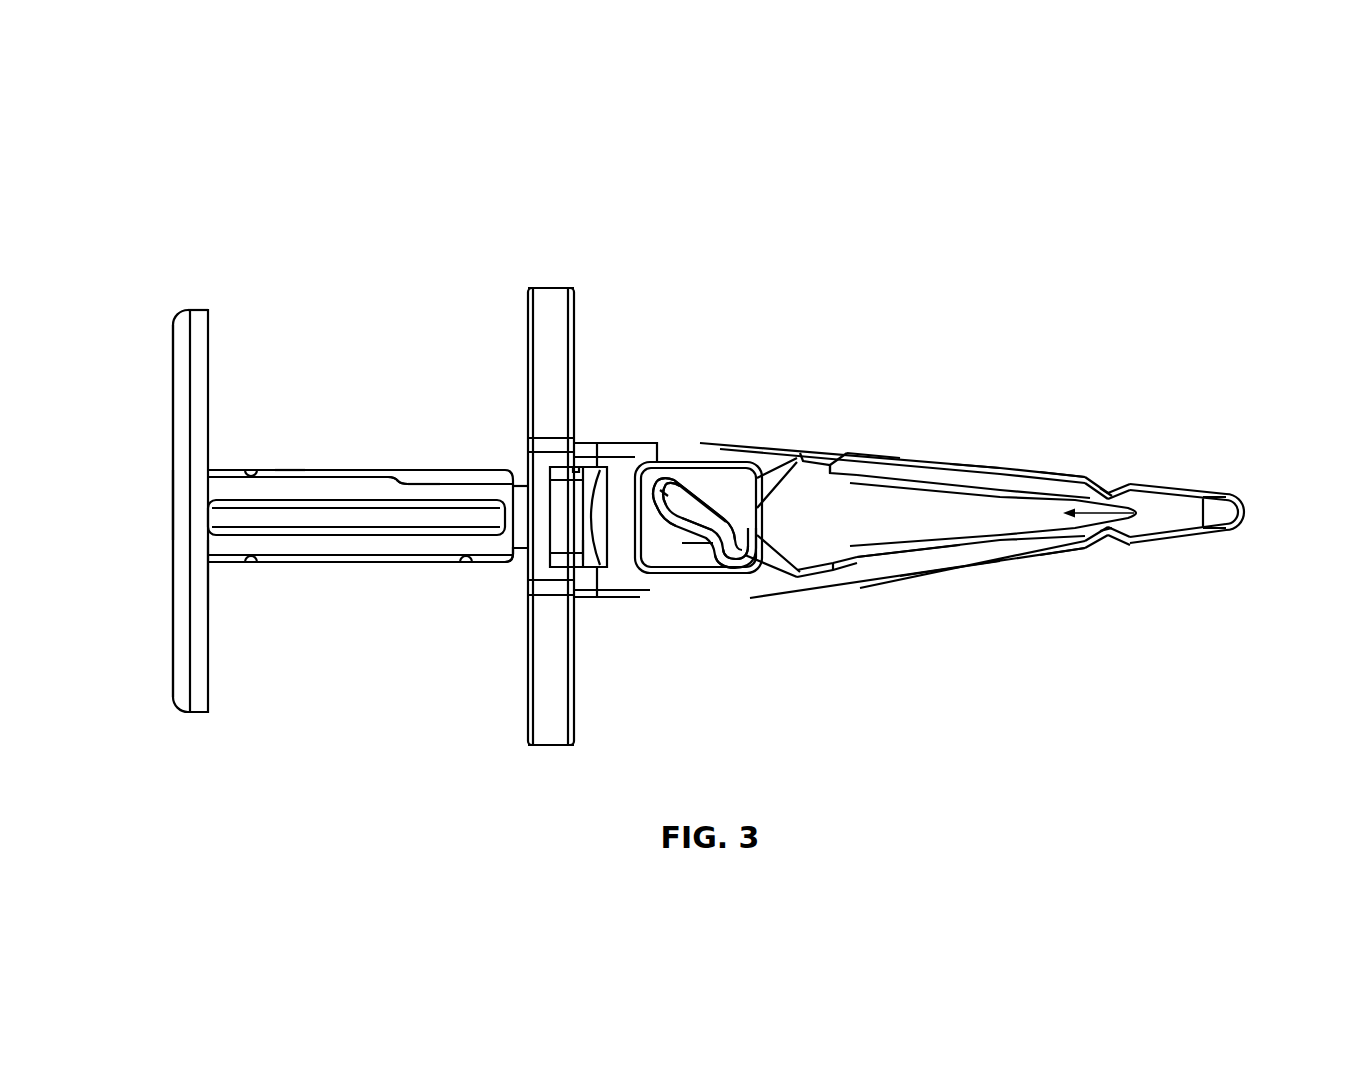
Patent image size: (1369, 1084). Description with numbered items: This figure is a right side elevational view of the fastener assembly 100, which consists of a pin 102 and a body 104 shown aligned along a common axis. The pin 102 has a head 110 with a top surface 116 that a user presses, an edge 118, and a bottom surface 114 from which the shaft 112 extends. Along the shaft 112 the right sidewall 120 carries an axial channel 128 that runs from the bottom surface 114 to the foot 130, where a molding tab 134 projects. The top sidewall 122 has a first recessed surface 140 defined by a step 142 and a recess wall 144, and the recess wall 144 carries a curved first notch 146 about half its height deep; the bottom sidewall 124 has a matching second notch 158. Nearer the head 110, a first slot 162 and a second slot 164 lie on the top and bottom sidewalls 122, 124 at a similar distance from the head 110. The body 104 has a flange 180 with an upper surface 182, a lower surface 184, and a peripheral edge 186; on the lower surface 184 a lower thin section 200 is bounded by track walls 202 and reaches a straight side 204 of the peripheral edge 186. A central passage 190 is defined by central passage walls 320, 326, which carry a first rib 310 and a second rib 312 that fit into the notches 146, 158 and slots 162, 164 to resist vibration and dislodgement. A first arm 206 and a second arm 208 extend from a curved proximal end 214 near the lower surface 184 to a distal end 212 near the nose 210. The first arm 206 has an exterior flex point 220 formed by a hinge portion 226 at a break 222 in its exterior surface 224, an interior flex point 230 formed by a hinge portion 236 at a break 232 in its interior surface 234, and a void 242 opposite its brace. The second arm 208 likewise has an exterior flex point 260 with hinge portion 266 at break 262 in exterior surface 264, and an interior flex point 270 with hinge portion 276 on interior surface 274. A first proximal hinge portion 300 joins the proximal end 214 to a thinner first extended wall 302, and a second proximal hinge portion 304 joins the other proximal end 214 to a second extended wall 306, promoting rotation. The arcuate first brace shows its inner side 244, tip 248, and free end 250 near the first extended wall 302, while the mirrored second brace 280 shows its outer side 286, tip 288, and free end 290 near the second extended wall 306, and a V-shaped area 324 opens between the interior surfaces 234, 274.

The fastener assembly 100 is at (165, 185).
The pin 102 is at (175, 612).
The body 104 is at (1250, 518).
The head 110 is at (180, 560).
The shaft 112 is at (290, 565).
The bottom surface 114 is at (205, 316).
The top surface 116 is at (180, 497).
The edge 118 is at (185, 432).
The right sidewall 120 is at (317, 538).
The top sidewall 122 is at (287, 469).
The bottom sidewall 124 is at (316, 563).
The axial channel 128 is at (332, 527).
The foot 130 is at (445, 475).
The molding tab 134 is at (512, 555).
The first recessed surface 140 is at (392, 473).
The step 142 is at (408, 481).
The recess wall 144 is at (404, 474).
The first notch 146 is at (415, 473).
The second notch 158 is at (468, 565).
The first slot 162 is at (250, 470).
The second slot 164 is at (250, 565).
The flange 180 is at (540, 290).
The upper surface 182 is at (528, 325).
The lower surface 184 is at (580, 323).
The peripheral edge 186 is at (550, 742).
The central passage 190 is at (638, 574).
The lower thin section 200 is at (480, 487).
The track walls 202 is at (528, 635).
The straight side 204 is at (463, 474).
The first arm 206 is at (1010, 468).
The second arm 208 is at (1005, 554).
The nose 210 is at (1248, 500).
The distal end 212 is at (1200, 495).
The proximal end 214 is at (797, 463).
The exterior flex point 220 is at (1130, 486).
The break 222 is at (1108, 458).
The exterior surface 224 is at (1045, 470).
The hinge portion 226 is at (1088, 479).
The interior flex point 230 is at (865, 458).
The break 232 is at (838, 474).
The interior surface 234 is at (990, 466).
The hinge portion 236 is at (846, 455).
The void 242 is at (842, 545).
The inner side 244 is at (715, 582).
The tip 248 is at (676, 586).
The free end 250 is at (686, 572).
The exterior flex point 260 is at (1130, 547).
The break 262 is at (1107, 542).
The exterior surface 264 is at (1080, 550).
The hinge portion 266 is at (1107, 570).
The interior flex point 270 is at (862, 572).
The interior surface 274 is at (940, 562).
The hinge portion 276 is at (835, 572).
The second brace 280 is at (676, 505).
The outer side 286 is at (678, 480).
The tip 288 is at (662, 496).
The free end 290 is at (668, 508).
The first proximal hinge portion 300 is at (700, 480).
The first extended wall 302 is at (690, 484).
The second proximal hinge portion 304 is at (740, 574).
The second extended wall 306 is at (722, 582).
The first rib 310 is at (577, 466).
The second rib 312 is at (597, 550).
The central passage wall 320 is at (580, 495).
The V-shaped area 324 is at (1145, 515).
The central passage wall 326 is at (630, 467).